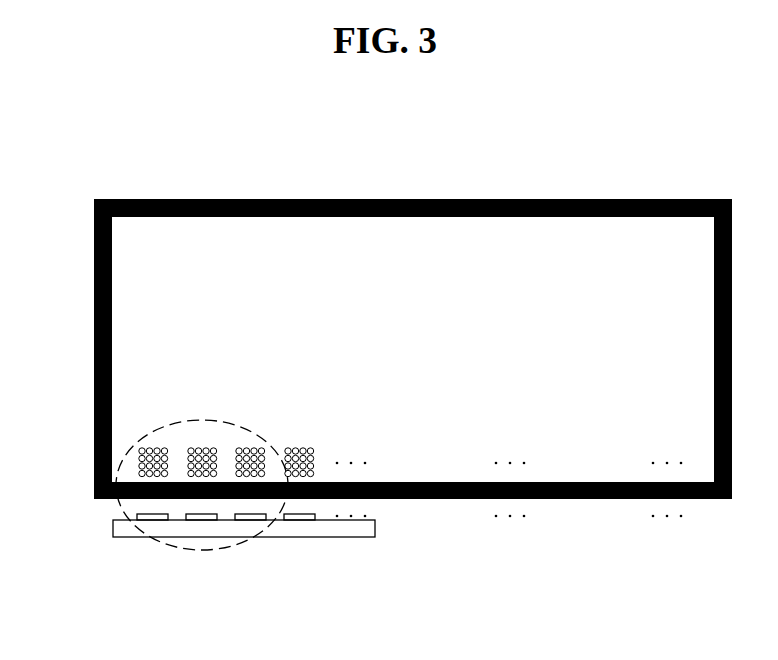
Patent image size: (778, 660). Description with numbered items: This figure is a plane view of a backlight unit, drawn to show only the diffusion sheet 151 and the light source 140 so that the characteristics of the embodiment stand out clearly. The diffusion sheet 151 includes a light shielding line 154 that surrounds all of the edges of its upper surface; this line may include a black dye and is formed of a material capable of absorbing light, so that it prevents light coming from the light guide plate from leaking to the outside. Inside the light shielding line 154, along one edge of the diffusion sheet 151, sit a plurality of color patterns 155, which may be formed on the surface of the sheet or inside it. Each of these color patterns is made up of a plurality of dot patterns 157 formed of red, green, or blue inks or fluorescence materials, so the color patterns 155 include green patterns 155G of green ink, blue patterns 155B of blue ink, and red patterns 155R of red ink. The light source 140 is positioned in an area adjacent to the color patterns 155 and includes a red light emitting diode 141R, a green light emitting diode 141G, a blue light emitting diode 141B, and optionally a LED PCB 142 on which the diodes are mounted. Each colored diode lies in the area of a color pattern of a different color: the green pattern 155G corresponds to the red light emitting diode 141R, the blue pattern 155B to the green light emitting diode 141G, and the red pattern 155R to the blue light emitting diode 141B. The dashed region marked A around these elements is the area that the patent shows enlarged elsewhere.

The diffusion sheet 151 is at (484, 240).
The light shielding line 154 is at (606, 199).
The color patterns 155 is at (277, 352).
The green pattern 155G is at (151, 436).
The blue pattern 155B is at (201, 436).
The red pattern 155R is at (251, 436).
The dot patterns 157 is at (138, 455).
The light source 140 is at (343, 606).
The red light emitting diode 141R is at (150, 521).
The green light emitting diode 141G is at (200, 521).
The blue light emitting diode 141B is at (250, 521).
The substrate 142 is at (323, 529).
The area A is at (116, 528).